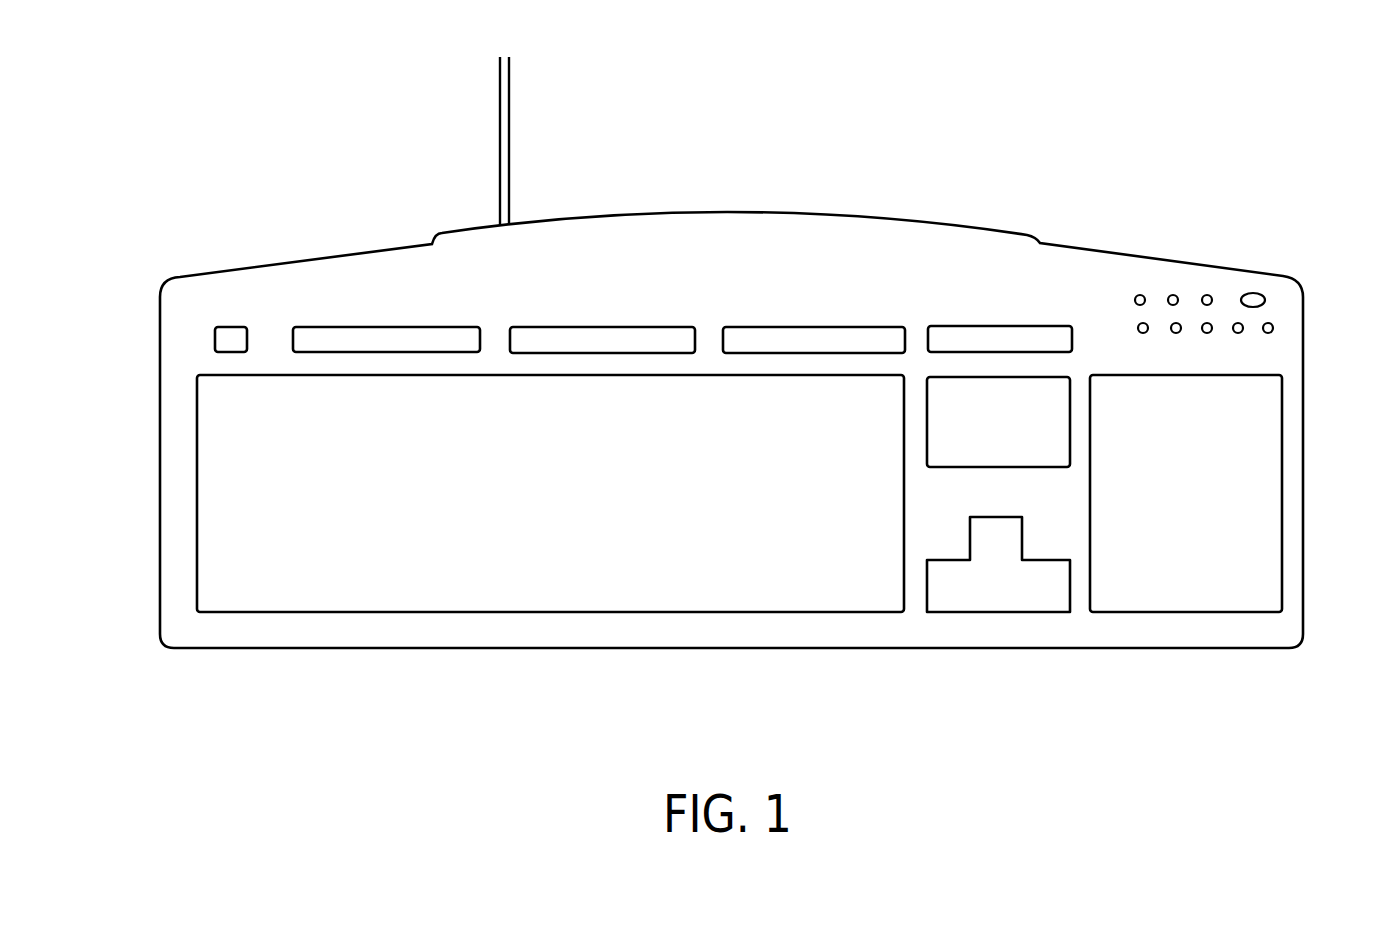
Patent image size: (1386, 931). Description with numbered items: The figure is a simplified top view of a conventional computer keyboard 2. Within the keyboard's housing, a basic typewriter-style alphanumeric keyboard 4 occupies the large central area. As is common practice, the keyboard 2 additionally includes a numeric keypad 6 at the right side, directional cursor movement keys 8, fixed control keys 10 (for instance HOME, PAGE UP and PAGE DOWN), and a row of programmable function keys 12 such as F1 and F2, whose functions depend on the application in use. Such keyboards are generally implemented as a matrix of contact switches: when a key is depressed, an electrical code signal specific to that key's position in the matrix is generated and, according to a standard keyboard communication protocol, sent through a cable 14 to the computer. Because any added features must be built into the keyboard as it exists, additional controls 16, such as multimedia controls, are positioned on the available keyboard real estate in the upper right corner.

The computer keyboard 2 is at (309, 649).
The alphanumeric keyboard 4 is at (560, 580).
The numeric keypad 6 is at (1267, 478).
The directional cursor movement keys 8 is at (1012, 593).
The fixed control keys 10 is at (1052, 400).
The programmable function keys 12 is at (232, 338).
The cable 14 is at (509, 97).
The additional controls 16 is at (1193, 296).